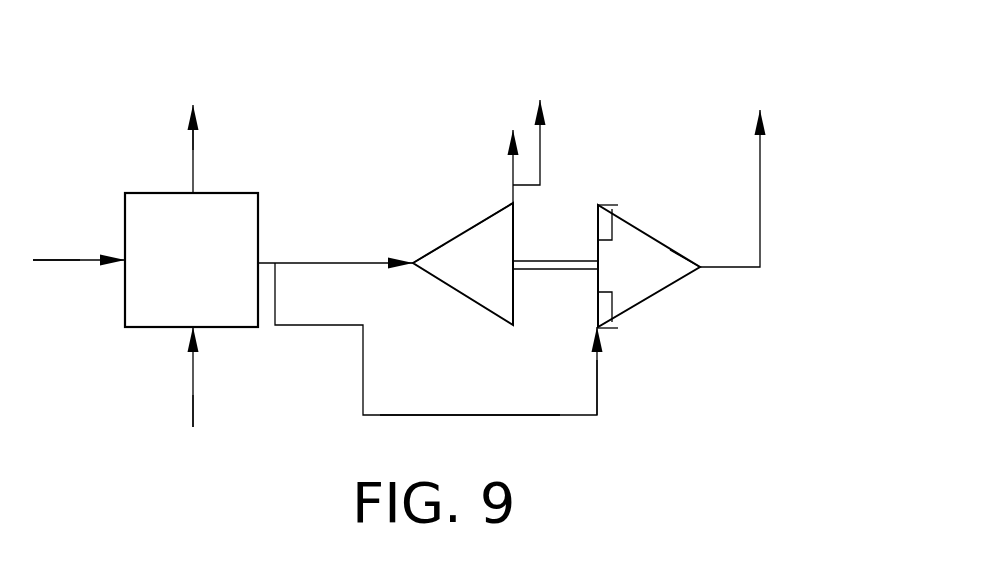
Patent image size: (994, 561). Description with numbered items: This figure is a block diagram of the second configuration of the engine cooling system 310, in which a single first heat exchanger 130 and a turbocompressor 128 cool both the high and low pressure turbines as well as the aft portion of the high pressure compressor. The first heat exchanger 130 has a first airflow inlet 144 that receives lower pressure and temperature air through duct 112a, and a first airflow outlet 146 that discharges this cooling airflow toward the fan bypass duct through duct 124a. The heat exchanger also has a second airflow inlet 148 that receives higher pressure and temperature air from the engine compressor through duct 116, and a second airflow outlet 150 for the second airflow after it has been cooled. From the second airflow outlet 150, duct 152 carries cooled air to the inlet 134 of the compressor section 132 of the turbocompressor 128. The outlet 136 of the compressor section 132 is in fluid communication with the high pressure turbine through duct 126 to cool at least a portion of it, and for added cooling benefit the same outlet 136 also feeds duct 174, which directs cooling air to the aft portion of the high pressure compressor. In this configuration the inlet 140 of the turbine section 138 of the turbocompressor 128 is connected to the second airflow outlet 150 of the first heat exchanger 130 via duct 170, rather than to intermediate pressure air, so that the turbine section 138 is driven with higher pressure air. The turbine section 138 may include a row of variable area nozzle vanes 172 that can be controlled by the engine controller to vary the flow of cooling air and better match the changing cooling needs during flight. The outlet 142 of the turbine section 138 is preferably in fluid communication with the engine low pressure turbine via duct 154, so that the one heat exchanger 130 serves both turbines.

The engine cooling system 310 is at (490, 100).
The first heat exchanger 130 is at (217, 276).
The first airflow outlet 146 is at (195, 192).
The duct 124a is at (193, 148).
The second airflow inlet 148 is at (124, 255).
The duct 116 is at (50, 263).
The first airflow inlet 144 is at (196, 331).
The duct 112a is at (194, 400).
The second airflow outlet 150 is at (263, 262).
The duct 152 is at (291, 266).
The duct 170 is at (512, 413).
The compressor section 132 is at (500, 277).
The outlet 136 is at (512, 204).
The inlet 134 is at (414, 268).
The duct 126 is at (512, 166).
The duct 174 is at (541, 142).
The turbocompressor 128 is at (555, 258).
The turbine section 138 is at (656, 277).
The outlet 142 is at (702, 263).
The variable area nozzle vanes 172 is at (597, 305).
The inlet 140 is at (602, 330).
The duct 154 is at (762, 170).